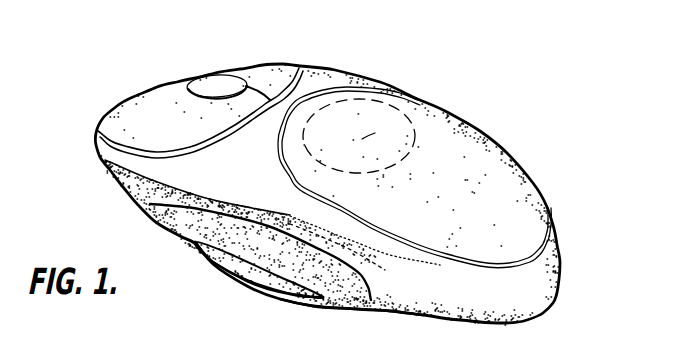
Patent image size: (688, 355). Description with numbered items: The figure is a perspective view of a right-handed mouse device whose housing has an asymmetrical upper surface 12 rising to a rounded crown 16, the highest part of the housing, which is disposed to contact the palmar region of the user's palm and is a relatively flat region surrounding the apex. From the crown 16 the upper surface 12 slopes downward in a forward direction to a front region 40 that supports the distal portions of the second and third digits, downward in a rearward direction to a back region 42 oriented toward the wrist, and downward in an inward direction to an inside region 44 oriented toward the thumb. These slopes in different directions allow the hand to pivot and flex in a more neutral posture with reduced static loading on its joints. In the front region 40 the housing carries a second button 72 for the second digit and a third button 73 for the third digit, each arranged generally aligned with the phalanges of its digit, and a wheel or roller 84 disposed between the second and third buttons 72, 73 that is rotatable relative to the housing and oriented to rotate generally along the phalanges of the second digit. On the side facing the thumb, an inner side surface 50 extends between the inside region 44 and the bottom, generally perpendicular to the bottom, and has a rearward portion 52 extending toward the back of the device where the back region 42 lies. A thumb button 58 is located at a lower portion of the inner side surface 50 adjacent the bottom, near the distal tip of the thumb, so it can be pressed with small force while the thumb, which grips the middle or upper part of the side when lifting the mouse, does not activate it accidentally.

The front region 40 is at (164, 78).
The upper surface 12 is at (329, 80).
The second button 72 is at (200, 113).
The third button 73 is at (265, 73).
The roller 84 is at (212, 70).
The back region 42 is at (513, 198).
The crown 16 is at (370, 153).
The inside region 44 is at (235, 173).
The inner side surface 50 is at (196, 228).
The thumb button 58 is at (253, 268).
The rearward portion 52 is at (352, 288).